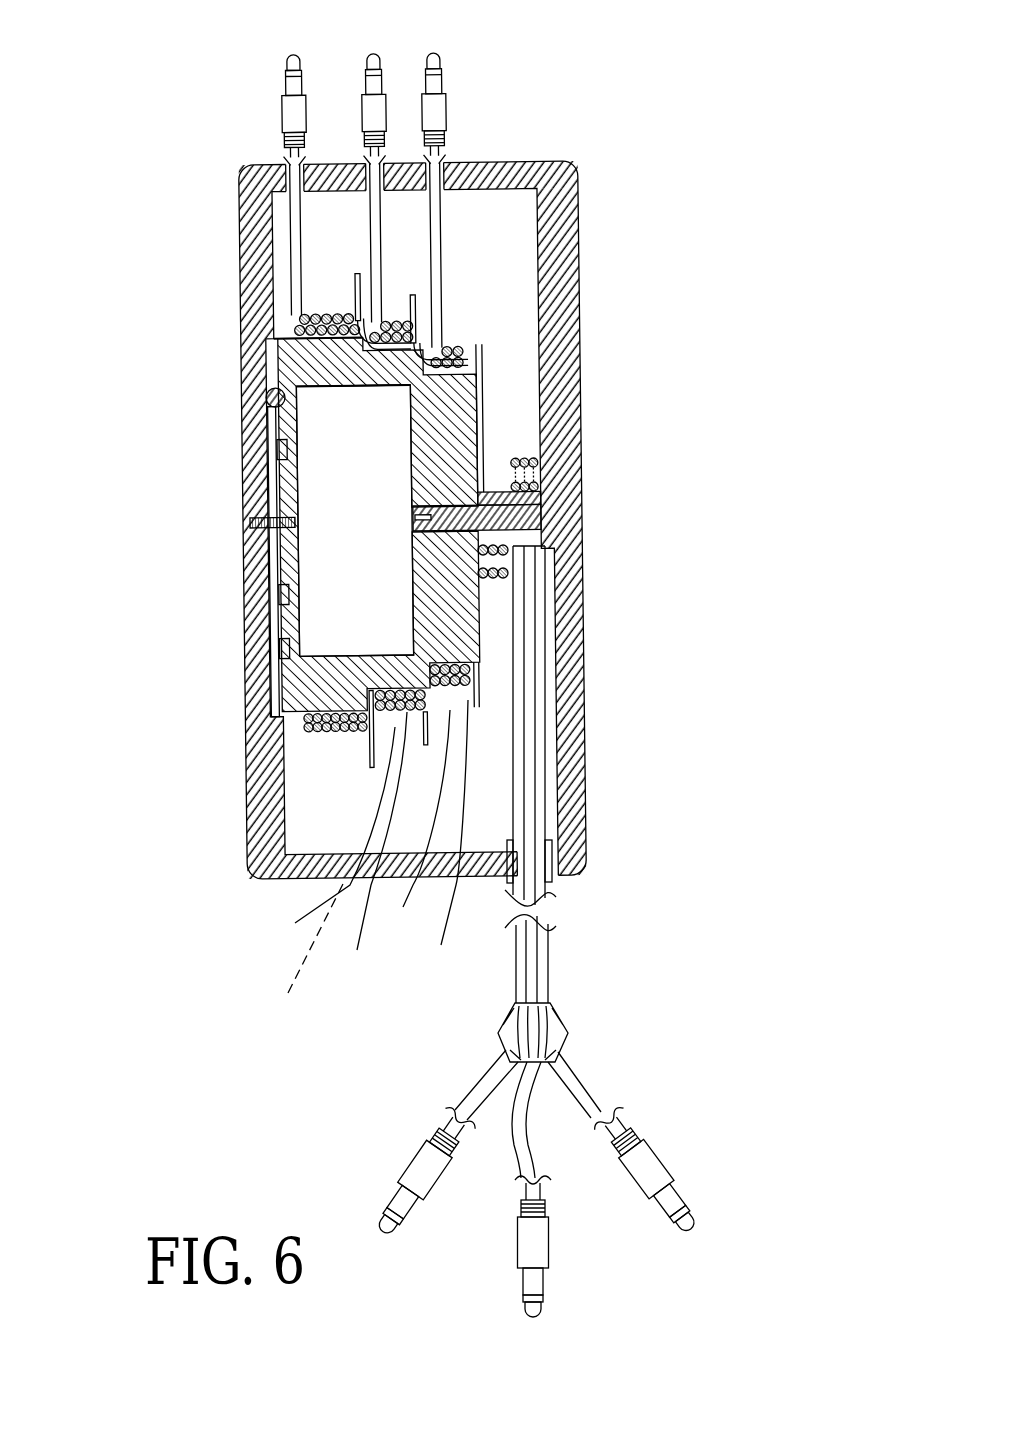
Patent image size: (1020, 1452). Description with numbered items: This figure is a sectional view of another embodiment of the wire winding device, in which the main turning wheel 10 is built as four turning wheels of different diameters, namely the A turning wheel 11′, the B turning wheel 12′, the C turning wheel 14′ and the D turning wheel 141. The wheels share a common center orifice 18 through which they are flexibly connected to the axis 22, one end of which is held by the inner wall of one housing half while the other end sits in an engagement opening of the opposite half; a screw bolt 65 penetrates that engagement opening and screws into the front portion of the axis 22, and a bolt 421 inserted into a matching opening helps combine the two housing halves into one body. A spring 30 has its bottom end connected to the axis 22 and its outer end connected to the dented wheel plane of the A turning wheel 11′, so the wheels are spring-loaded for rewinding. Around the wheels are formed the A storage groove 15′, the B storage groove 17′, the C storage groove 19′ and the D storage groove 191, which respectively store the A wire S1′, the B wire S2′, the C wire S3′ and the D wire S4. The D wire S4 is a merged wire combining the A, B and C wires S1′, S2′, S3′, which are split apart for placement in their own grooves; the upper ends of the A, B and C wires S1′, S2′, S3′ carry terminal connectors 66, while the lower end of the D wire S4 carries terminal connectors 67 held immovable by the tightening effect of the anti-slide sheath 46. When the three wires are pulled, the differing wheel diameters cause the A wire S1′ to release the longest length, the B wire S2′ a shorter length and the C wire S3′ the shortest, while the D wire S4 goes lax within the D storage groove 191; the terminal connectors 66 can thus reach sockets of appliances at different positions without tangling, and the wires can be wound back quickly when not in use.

The main turning wheel 10 is at (323, 807).
The A turning wheel 11′ is at (310, 340).
The B turning wheel 12′ is at (380, 357).
The C turning wheel 14′ is at (443, 408).
The D turning wheel 141 is at (540, 496).
The A storage groove 15′ is at (337, 293).
The B storage groove 17′ is at (395, 300).
The center orifice 18 is at (415, 537).
The C storage groove 19′ is at (420, 345).
The D storage groove 191 is at (513, 449).
The axis 22 is at (470, 518).
The spring 30 is at (340, 515).
The bolt 421 is at (294, 956).
The anti-slide sheath 46 is at (550, 842).
The screw bolt 65 is at (243, 520).
The terminal connectors 66 is at (613, 50).
The terminal connectors 67 is at (428, 1163).
The A wire S1′ is at (290, 238).
The B wire S2′ is at (375, 213).
The C wire S3′ is at (438, 247).
The D wire S4 is at (513, 548).